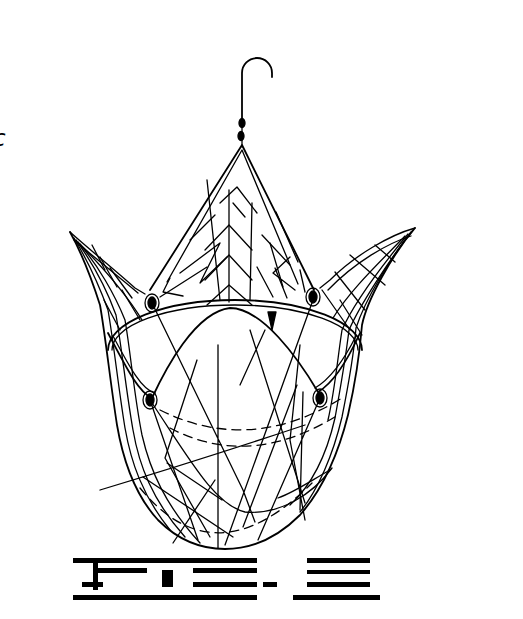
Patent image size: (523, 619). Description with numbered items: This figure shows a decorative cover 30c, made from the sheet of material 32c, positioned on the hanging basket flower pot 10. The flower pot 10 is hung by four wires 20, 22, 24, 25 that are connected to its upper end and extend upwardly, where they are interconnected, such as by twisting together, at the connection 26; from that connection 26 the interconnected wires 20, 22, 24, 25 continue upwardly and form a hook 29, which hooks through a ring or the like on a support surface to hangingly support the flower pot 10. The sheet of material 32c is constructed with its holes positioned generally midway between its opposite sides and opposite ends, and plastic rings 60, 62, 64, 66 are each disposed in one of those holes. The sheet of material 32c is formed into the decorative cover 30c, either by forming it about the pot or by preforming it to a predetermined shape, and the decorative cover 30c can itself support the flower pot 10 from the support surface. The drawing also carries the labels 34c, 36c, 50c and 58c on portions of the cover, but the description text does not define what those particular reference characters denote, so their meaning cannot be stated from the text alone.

The hanging basket flower pot 10 is at (322, 287).
The wire 20 is at (125, 337).
The wire 22 is at (217, 180).
The wire 24 is at (276, 212).
The wire 25 is at (340, 342).
The connection 26 is at (244, 126).
The hook 29 is at (272, 70).
The decorative cover 30c is at (110, 445).
The sheet of material 32c is at (330, 470).
The bottom hoop 34c is at (205, 520).
The mesh 36c is at (233, 203).
The petal section 50c is at (98, 321).
The cord 58c is at (100, 490).
The plastic ring 60 is at (148, 296).
The plastic ring 62 is at (380, 230).
The plastic ring 64 is at (327, 400).
The plastic ring 66 is at (143, 398).